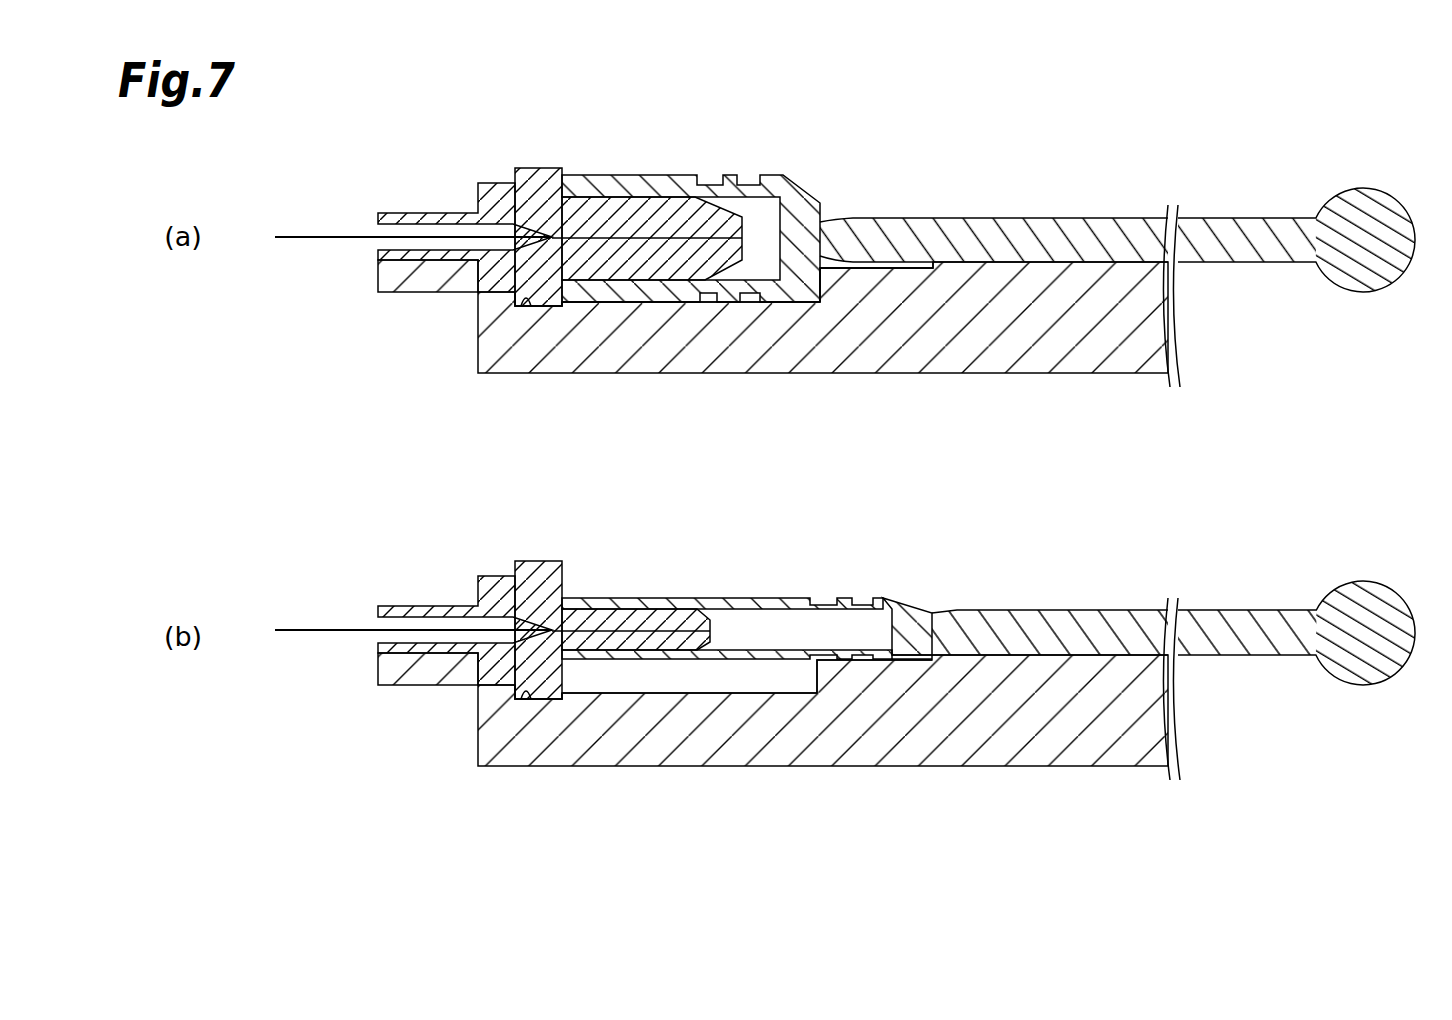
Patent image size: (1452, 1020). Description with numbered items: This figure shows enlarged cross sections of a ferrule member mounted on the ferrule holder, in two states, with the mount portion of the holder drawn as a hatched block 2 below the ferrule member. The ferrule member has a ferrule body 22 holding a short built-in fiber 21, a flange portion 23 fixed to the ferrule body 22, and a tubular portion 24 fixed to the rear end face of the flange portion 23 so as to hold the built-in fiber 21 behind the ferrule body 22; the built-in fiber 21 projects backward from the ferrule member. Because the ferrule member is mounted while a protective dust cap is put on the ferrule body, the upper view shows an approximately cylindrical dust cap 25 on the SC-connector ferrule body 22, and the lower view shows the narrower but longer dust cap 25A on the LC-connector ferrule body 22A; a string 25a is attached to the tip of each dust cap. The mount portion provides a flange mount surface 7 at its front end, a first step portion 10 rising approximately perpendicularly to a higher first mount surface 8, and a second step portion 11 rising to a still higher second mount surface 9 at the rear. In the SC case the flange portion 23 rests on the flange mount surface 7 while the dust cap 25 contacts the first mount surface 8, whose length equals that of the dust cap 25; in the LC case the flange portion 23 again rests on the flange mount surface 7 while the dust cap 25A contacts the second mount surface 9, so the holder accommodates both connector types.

The housing body 2 is at (474, 328).
The flange mount surface 7 is at (525, 296).
The first mount surface 8 is at (668, 295).
The second mount surface 9 is at (869, 266).
The first step portion 10 is at (550, 297).
The second step portion 11 is at (815, 287).
The built-in fiber 21 is at (320, 233).
The ferrule body 22 is at (648, 215).
The ferrule body 22A is at (648, 612).
The flange portion 23 is at (543, 190).
The tubular portion 24 is at (425, 216).
The dust cap 25 is at (798, 207).
The dust cap 25A is at (903, 613).
The string 25a is at (1100, 232).